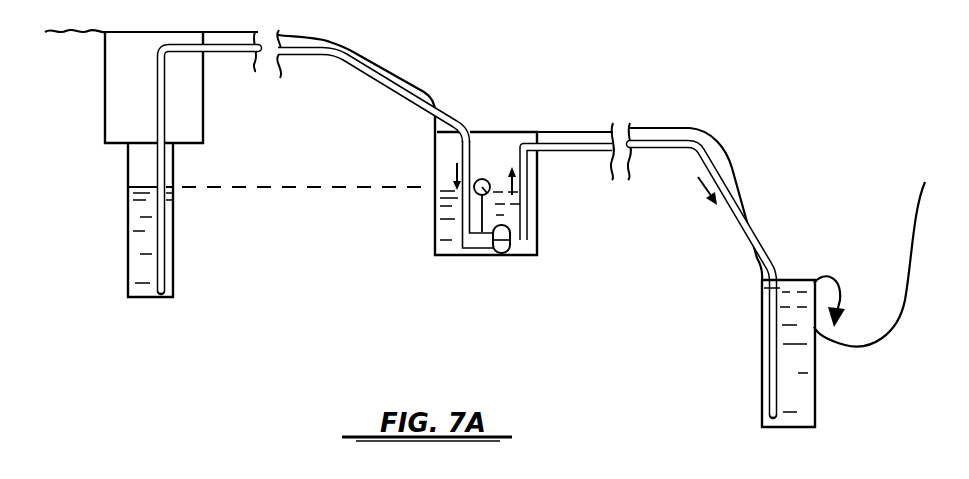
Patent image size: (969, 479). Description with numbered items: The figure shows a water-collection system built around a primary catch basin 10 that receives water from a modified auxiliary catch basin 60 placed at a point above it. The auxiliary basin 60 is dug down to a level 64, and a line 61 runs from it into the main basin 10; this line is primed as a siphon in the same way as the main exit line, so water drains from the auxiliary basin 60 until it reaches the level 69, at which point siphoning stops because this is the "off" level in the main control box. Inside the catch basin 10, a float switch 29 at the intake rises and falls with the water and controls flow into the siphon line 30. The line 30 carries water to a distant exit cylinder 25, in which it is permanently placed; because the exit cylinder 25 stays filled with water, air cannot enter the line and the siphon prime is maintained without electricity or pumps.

The catch basin 10 is at (540, 203).
The exit cylinder 25 is at (762, 330).
The float switch 29 is at (488, 262).
The line 30 is at (688, 133).
The auxiliary catch basin 60 is at (125, 88).
The line 61 is at (368, 65).
The level 64 is at (128, 297).
The level 69 is at (393, 190).